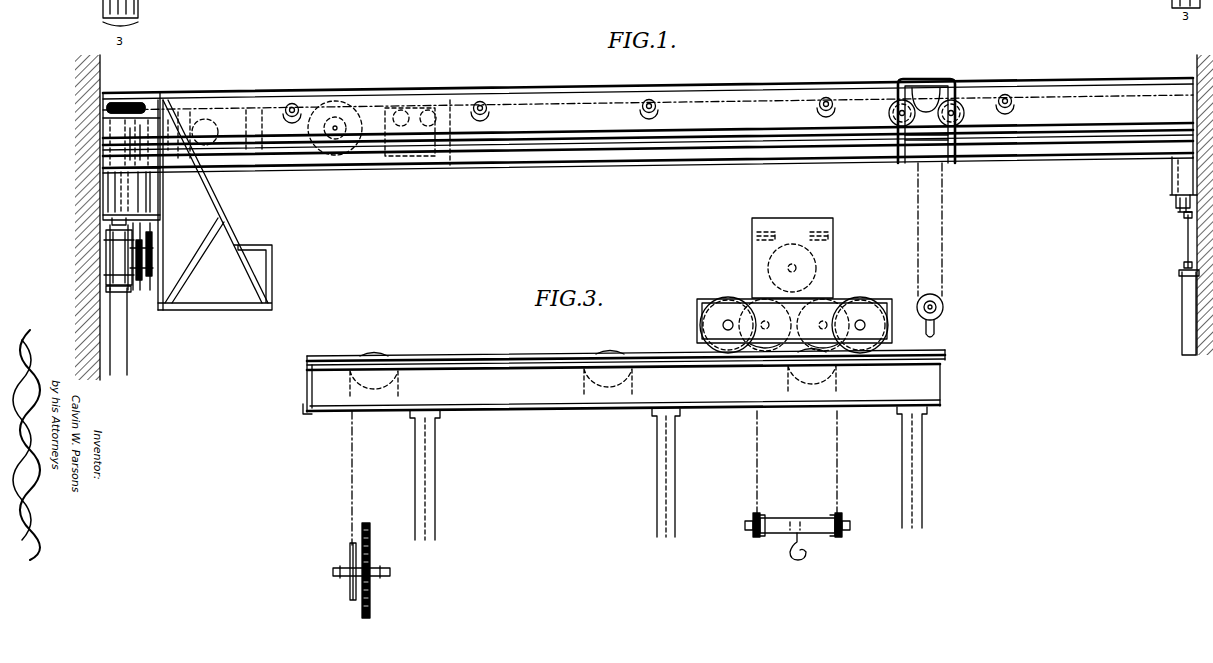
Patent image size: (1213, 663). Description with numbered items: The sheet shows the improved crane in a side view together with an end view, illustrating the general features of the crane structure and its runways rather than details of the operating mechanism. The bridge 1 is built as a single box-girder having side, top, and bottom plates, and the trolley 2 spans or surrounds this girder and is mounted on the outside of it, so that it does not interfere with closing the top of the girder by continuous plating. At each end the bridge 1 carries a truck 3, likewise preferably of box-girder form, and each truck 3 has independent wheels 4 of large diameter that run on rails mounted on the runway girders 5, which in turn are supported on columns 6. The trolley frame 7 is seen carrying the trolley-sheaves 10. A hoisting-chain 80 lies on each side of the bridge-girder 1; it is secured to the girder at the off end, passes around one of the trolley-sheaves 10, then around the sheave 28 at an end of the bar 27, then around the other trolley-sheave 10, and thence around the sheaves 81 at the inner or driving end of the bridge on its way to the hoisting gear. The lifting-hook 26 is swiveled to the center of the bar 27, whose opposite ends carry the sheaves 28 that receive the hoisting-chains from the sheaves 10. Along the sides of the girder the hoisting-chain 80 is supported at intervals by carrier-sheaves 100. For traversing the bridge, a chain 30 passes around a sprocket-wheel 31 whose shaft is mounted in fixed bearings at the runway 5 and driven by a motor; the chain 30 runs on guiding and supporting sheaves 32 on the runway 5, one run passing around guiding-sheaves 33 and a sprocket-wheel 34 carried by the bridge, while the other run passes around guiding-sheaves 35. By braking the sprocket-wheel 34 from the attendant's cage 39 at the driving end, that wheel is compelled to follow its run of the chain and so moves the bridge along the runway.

In FIG. 1, the bridge 1 is at (648, 125).
In FIG. 3, the bridge 1 is at (748, 222).
In FIG. 1, the trolley 2 is at (960, 70).
In FIG. 1, the truck 3 is at (1176, 171).
In FIG. 3, the truck 3 is at (692, 300).
In FIG. 3, the wheels 4 is at (794, 317).
In FIG. 1, the girders 5 is at (112, 261).
In FIG. 3, the girders 5 is at (624, 382).
In FIG. 1, the columns 6 is at (121, 332).
In FIG. 3, the columns 6 is at (670, 473).
In FIG. 1, the trolley frame 7 is at (926, 121).
In FIG. 1, the trolley-sheaves 10 is at (888, 115).
In FIG. 1, the lifting-hook 26 is at (938, 330).
In FIG. 3, the lifting-hook 26 is at (798, 554).
In FIG. 3, the bar 27 is at (797, 472).
In FIG. 1, the sheaves 28 is at (944, 308).
In FIG. 3, the sheaves 28 is at (797, 535).
In FIG. 3, the chain 30 is at (360, 478).
In FIG. 1, the sprocket-wheel 31 is at (139, 264).
In FIG. 3, the sprocket-wheel 31 is at (352, 586).
In FIG. 3, the guiding and supporting sheaves 32 is at (830, 384).
In FIG. 1, the guiding-sheaves 33 is at (150, 207).
In FIG. 3, the guiding-sheaves 33 is at (794, 325).
In FIG. 1, the sprocket-wheel 34 is at (131, 156).
In FIG. 3, the sprocket-wheel 34 is at (792, 268).
In FIG. 1, the guiding-sheaves 35 is at (140, 196).
In FIG. 1, the cage 39 is at (212, 306).
In FIG. 1, the hoisting-chain 80 is at (823, 194).
In FIG. 1, the sheaves 81 is at (125, 104).
In FIG. 1, the carrier-sheaves 100 is at (287, 110).